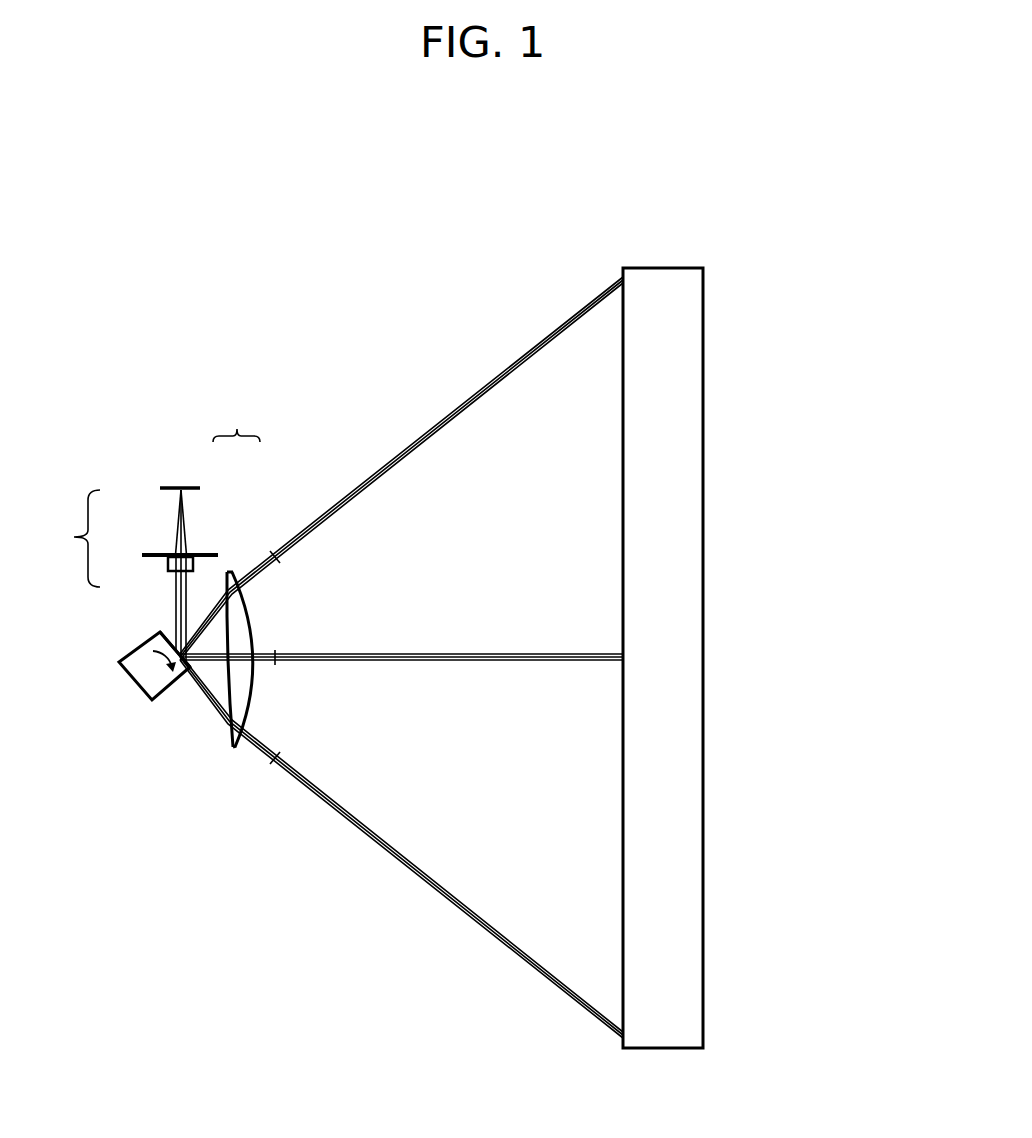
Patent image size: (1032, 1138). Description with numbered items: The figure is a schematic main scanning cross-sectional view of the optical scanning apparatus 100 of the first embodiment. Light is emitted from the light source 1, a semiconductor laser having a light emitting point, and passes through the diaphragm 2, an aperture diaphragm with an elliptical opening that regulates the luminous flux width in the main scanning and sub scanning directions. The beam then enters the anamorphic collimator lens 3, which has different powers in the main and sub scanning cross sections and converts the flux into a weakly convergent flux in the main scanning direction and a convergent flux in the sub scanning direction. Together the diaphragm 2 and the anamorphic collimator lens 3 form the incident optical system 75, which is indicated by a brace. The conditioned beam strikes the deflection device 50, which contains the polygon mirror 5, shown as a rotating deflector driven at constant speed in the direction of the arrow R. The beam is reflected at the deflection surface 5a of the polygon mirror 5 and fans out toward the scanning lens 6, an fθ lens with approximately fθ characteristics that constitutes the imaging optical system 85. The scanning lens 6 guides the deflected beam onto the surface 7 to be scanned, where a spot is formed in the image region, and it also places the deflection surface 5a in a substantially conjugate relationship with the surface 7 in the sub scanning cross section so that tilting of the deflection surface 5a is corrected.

The optical scanning apparatus 100 is at (810, 224).
The light source 1 is at (170, 486).
The diaphragm 2 is at (150, 553).
The anamorphic collimator lens 3 is at (168, 564).
The incident optical system 75 is at (121, 538).
The polygon mirror 5 is at (167, 690).
The deflection surface 5a is at (167, 632).
The deflection device 50 is at (124, 693).
The scanning lens 6 is at (232, 580).
The imaging optical system 85 is at (236, 567).
The surface to be scanned 7 is at (622, 547).